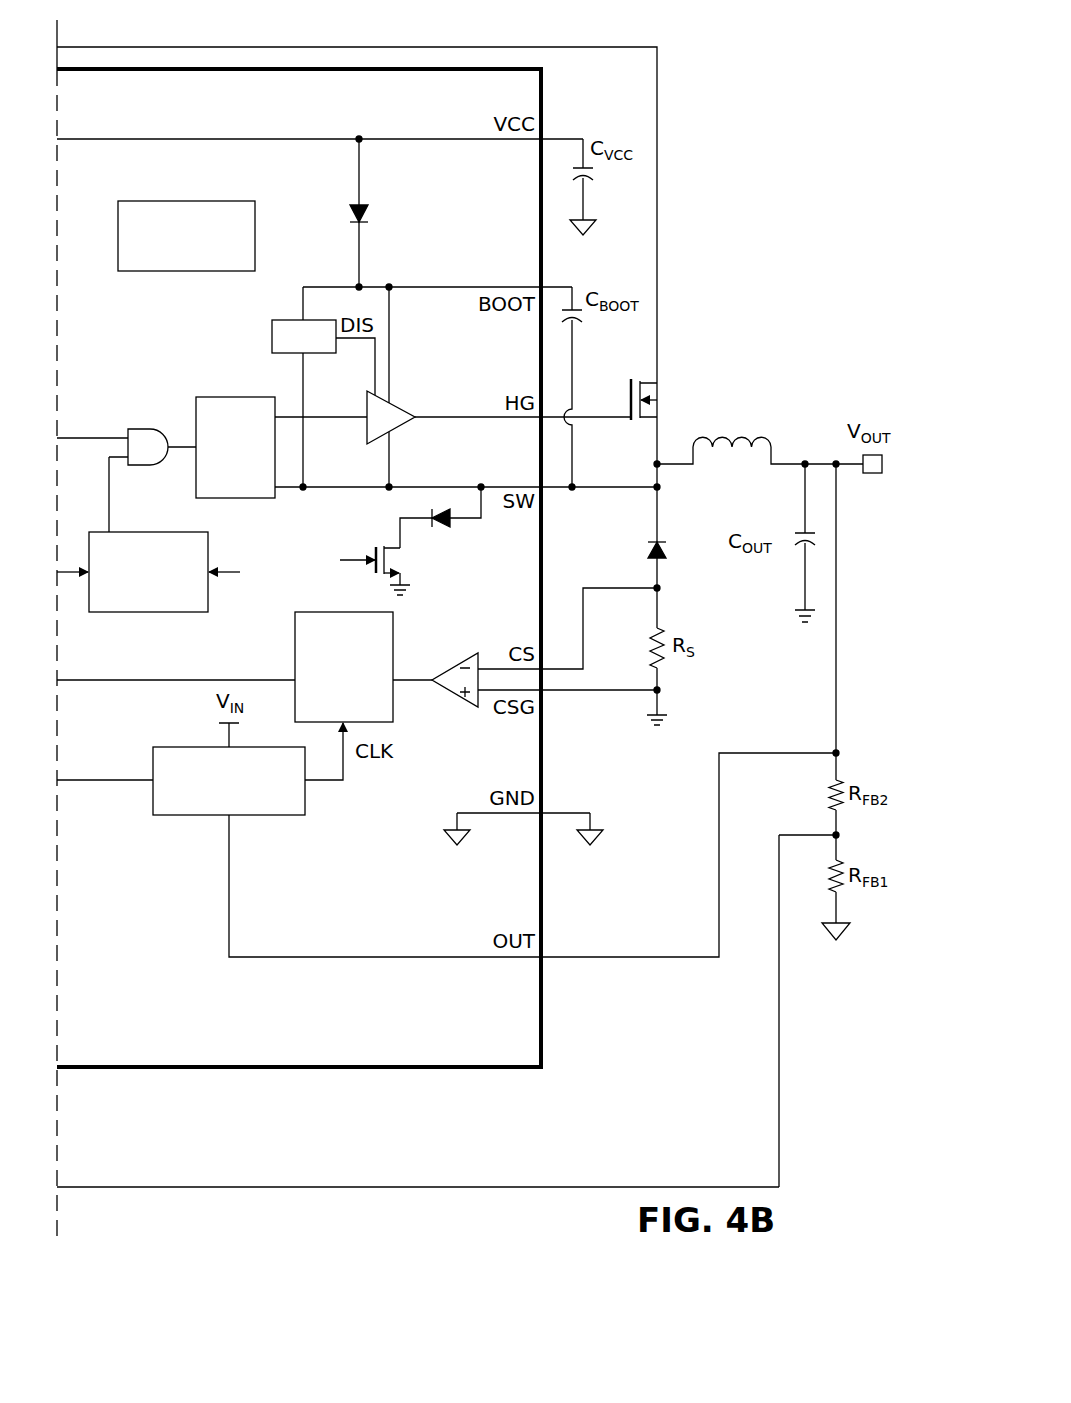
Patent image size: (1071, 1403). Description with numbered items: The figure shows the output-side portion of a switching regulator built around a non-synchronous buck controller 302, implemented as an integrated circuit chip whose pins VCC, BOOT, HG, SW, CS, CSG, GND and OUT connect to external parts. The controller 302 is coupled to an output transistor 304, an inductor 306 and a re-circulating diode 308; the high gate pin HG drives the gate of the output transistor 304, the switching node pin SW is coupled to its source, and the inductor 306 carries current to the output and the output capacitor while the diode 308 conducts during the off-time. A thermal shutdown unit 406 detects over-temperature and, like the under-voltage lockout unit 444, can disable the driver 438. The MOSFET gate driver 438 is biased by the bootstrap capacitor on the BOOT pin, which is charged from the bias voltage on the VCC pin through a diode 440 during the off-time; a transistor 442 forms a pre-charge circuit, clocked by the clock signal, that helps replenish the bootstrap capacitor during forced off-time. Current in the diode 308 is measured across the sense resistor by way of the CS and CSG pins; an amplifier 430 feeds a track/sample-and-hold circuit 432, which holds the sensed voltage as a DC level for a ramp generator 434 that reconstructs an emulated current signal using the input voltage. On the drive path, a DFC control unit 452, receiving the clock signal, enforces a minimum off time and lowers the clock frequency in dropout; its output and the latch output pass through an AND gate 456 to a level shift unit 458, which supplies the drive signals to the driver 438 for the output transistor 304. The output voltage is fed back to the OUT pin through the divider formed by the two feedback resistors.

The non-synchronous buck controller 302 is at (304, 67).
The output transistor 304 is at (686, 384).
The inductor 306 is at (745, 437).
The diode 308 is at (662, 548).
The thermal shutdown unit 406 is at (205, 201).
The amplifier 430 is at (453, 660).
The sample/hold circuit 432 is at (293, 657).
The ramp generator 434 is at (270, 816).
The MOSFET gate driver 438 is at (400, 422).
The diode 440 is at (364, 207).
The transistor 442 is at (395, 548).
The under-voltage lockout unit 444 is at (272, 336).
The DFC control unit 452 is at (159, 532).
The AND gate 456 is at (147, 429).
The level shift unit 458 is at (222, 397).